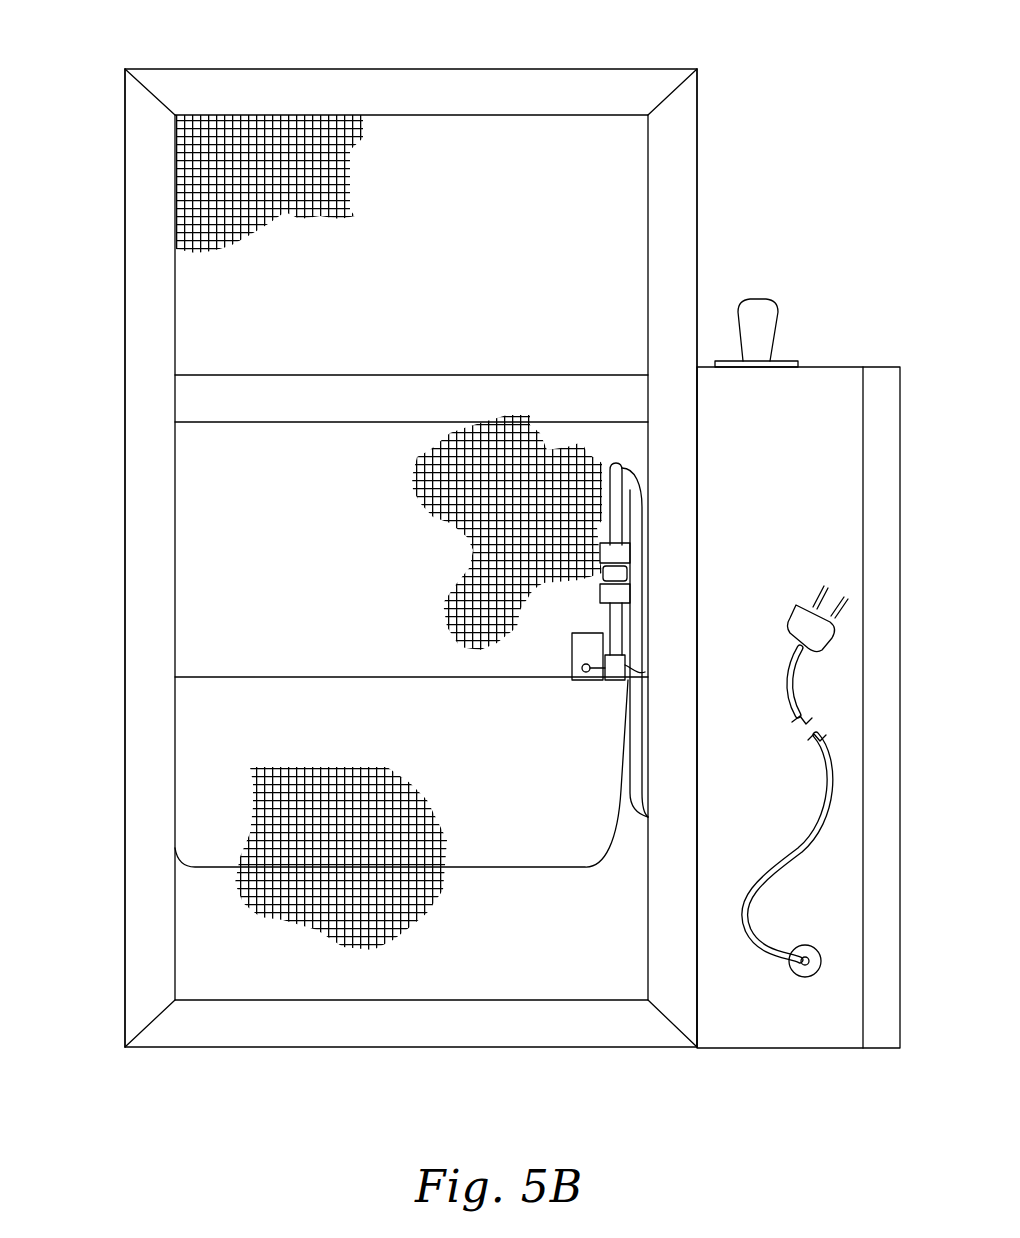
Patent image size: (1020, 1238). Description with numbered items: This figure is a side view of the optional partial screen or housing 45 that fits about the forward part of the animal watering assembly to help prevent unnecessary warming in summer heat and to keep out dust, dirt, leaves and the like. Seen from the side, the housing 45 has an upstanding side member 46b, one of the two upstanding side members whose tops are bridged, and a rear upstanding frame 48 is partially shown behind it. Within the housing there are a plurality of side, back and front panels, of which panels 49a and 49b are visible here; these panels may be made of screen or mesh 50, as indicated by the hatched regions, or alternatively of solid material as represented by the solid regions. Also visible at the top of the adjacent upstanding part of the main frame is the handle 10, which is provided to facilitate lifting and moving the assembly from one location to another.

The housing 45 is at (474, 524).
The upstanding side member 46b is at (146, 622).
The rear upstanding frame 48 is at (684, 257).
The panel 49a is at (478, 256).
The panel 49b is at (385, 600).
The screen or mesh 50 is at (268, 213).
The handle 10 is at (757, 337).